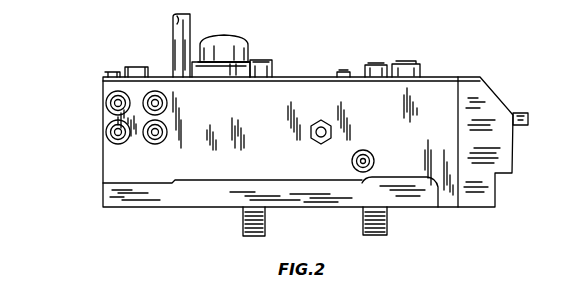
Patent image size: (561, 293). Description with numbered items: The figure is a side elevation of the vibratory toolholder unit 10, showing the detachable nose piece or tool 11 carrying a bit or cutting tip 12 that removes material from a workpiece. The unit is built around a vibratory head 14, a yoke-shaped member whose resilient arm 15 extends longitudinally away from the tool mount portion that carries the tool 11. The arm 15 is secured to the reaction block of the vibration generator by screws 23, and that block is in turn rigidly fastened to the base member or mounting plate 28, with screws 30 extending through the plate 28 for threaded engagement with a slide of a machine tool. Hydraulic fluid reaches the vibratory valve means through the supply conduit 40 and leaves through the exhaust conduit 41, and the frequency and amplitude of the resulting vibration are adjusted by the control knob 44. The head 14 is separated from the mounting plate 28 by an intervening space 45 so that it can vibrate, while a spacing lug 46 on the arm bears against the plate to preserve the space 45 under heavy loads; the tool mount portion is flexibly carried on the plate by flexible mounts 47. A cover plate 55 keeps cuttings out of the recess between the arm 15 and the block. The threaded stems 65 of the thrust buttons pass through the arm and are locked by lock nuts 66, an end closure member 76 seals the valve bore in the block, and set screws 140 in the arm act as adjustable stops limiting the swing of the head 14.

The vibratory toolholder unit 10 is at (353, 72).
The nose piece or tool 11 is at (496, 92).
The bit or cutting tip 12 is at (522, 113).
The vibratory head 14 is at (450, 77).
The resilient arm 15 is at (279, 106).
The screws 23 is at (106, 132).
The base member or mounting plate 28 is at (318, 200).
The screws 30 is at (243, 228).
The supply conduit 40 is at (175, 20).
The exhaust conduit 41 is at (180, 52).
The control knob 44 is at (236, 37).
The intervening space 45 is at (320, 166).
The spacing lug 46 is at (360, 196).
The flexible mounts 47 is at (412, 70).
The cover plate 55 is at (318, 76).
The threaded stems 65 is at (331, 136).
The lock nuts 66 is at (311, 138).
The end closure member 76 is at (222, 71).
The set screws 140 is at (374, 156).